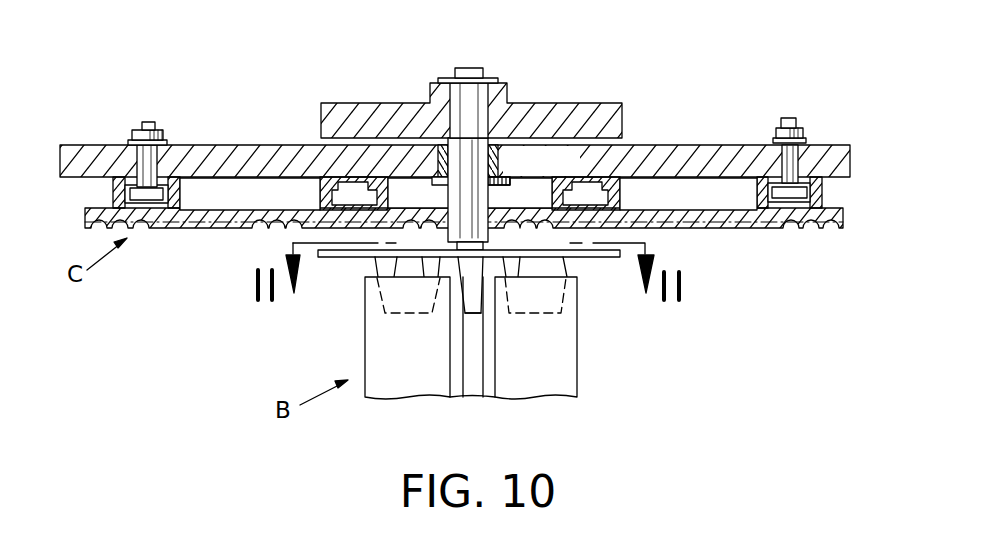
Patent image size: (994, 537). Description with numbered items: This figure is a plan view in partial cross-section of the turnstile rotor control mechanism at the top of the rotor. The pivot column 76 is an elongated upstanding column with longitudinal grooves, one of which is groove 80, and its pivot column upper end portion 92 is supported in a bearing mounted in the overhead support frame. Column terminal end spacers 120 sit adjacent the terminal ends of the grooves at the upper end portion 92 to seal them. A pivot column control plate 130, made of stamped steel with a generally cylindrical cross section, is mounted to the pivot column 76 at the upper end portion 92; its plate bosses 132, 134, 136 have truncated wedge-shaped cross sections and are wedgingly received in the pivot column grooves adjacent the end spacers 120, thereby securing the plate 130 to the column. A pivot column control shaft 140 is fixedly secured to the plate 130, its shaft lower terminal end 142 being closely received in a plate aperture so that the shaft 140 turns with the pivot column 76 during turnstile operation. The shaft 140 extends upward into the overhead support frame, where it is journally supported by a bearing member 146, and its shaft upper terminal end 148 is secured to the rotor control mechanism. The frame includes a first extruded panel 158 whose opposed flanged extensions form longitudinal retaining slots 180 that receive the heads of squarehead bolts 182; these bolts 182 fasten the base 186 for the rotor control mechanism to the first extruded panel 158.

The pivot column 76 is at (567, 368).
The groove 80 is at (470, 302).
The pivot column upper end portion 92 is at (375, 358).
The column terminal end spacer 120 is at (473, 358).
The pivot column control plate 130 is at (343, 253).
The plate boss 132 is at (563, 265).
The plate boss 134 is at (473, 303).
The plate boss 136 is at (373, 262).
The pivot column control shaft 140 is at (460, 194).
The shaft lower terminal end 142 is at (470, 245).
The bearing member 146 is at (503, 162).
The shaft upper terminal end 148 is at (470, 100).
The first extruded panel 158 is at (687, 221).
The longitudinal retaining slot 180 is at (333, 194).
The squarehead bolt 182 is at (150, 160).
The base 186 is at (235, 152).